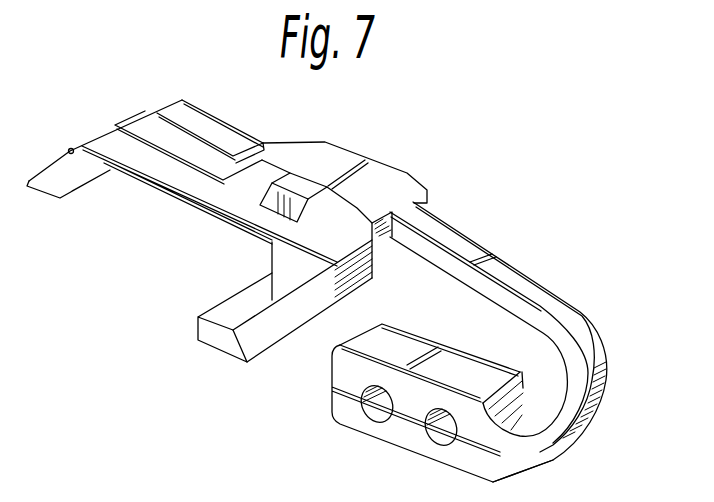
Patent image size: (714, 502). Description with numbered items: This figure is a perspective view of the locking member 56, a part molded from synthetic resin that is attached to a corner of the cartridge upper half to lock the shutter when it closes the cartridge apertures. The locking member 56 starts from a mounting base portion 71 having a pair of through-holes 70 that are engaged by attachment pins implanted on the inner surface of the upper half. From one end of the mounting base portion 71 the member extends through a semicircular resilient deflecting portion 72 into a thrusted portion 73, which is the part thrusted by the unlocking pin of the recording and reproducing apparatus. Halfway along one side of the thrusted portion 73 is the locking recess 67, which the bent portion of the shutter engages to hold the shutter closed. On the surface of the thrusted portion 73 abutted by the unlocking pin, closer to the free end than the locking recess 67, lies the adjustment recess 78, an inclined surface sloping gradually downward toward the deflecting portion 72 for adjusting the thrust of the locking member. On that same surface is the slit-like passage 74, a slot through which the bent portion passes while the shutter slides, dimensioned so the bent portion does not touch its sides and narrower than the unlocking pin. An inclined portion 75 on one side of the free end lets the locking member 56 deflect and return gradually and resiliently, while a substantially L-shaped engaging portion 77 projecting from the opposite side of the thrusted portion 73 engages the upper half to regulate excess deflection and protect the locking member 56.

The locking member 56 is at (453, 162).
The locking recess 67 is at (295, 188).
The through-holes 70 is at (377, 421).
The mounting base portion 71 is at (335, 370).
The semicircular resilient deflecting portion 72 is at (600, 360).
The thrusted portion 73 is at (223, 122).
The slit-like passage 74 is at (190, 138).
The inclined portion 75 is at (68, 152).
The engaging portion 77 is at (222, 343).
The adjustment recess 78 is at (217, 167).